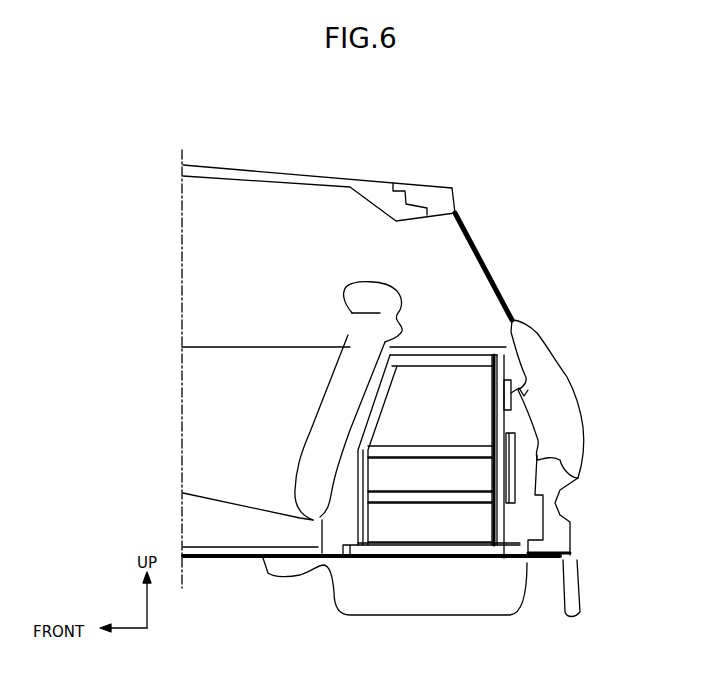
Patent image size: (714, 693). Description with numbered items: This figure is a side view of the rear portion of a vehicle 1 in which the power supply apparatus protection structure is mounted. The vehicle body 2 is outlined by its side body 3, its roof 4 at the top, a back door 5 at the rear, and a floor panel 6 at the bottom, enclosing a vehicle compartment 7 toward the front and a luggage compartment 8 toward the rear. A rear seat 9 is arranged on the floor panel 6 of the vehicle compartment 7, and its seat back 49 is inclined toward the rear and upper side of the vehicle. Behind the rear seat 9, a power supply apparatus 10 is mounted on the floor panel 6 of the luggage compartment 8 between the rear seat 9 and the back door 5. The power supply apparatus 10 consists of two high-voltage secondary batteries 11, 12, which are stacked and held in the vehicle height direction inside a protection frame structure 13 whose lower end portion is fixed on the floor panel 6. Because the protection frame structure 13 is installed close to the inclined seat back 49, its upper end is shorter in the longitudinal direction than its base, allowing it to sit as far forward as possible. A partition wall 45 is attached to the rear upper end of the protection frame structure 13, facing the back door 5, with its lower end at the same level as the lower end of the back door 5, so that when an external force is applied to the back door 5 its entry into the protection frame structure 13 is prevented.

The vehicle 1 is at (473, 142).
The vehicle body 2 is at (257, 166).
The side body 3 is at (220, 352).
The roof 4 is at (322, 177).
The back door 5 is at (550, 363).
The floor panel 6 is at (250, 562).
The vehicle compartment 7 is at (205, 250).
The luggage compartment 8 is at (449, 263).
The rear seat 9 is at (230, 497).
The power supply apparatus 10 is at (497, 517).
The secondary battery 11 is at (403, 528).
The secondary battery 12 is at (455, 480).
The protection frame structure 13 is at (470, 348).
The partition wall 45 is at (520, 395).
The seat back 49 is at (327, 412).